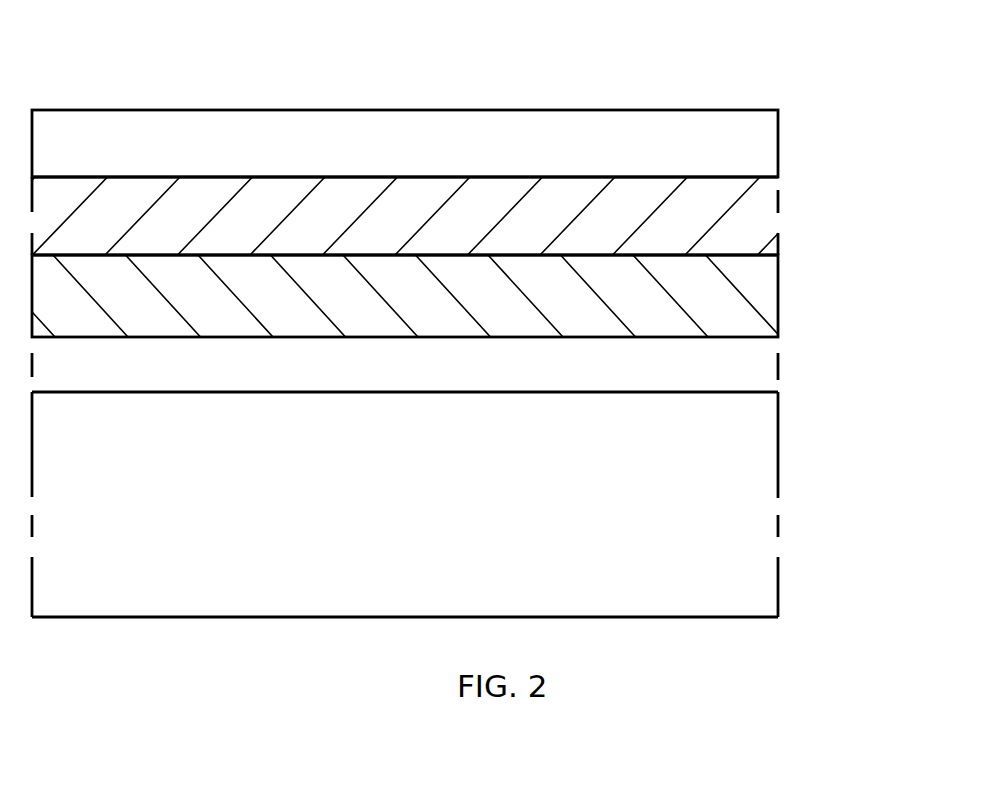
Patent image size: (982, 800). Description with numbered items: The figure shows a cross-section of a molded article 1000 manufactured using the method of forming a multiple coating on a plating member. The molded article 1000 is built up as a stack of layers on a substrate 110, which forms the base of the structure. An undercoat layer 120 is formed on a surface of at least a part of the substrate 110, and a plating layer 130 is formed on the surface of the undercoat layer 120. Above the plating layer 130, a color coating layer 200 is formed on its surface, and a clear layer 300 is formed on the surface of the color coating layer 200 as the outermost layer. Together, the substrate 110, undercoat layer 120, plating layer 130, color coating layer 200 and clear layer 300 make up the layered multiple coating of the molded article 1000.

The molded article 1000 is at (125, 66).
The clear layer 300 is at (768, 152).
The color coating layer 200 is at (768, 217).
The plating layer 130 is at (768, 301).
The undercoat layer 120 is at (768, 368).
The substrate 110 is at (768, 487).